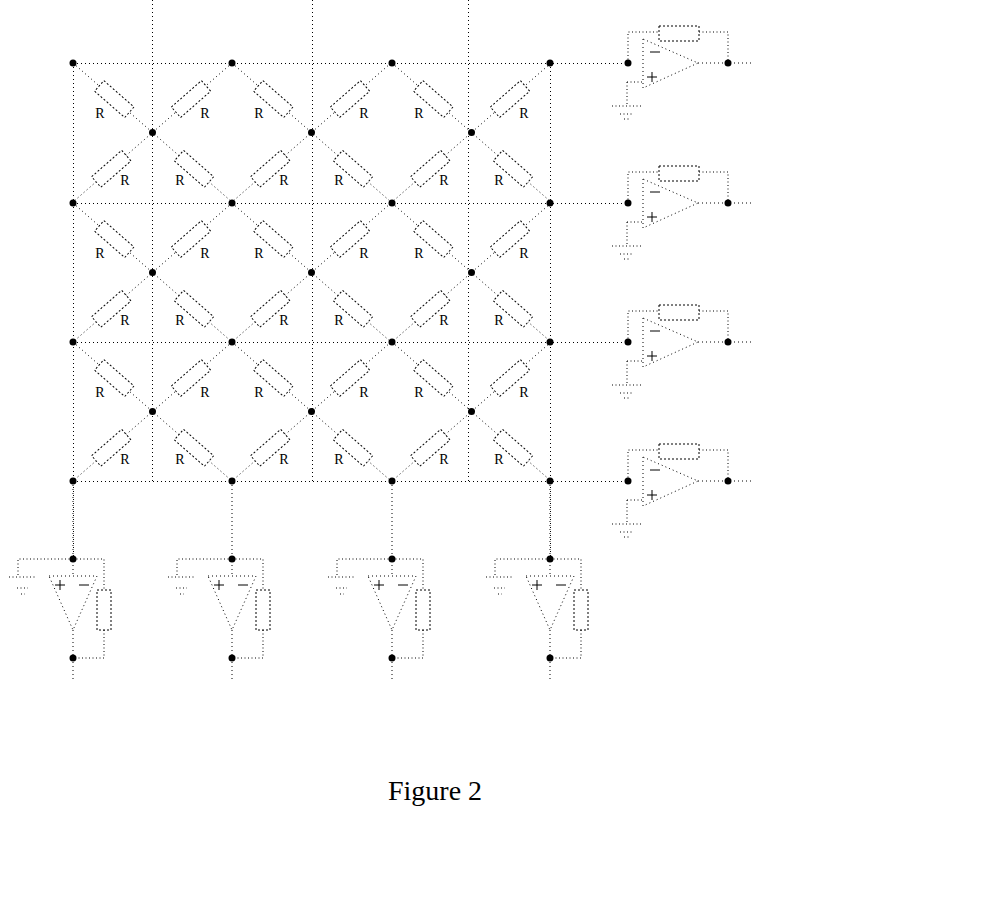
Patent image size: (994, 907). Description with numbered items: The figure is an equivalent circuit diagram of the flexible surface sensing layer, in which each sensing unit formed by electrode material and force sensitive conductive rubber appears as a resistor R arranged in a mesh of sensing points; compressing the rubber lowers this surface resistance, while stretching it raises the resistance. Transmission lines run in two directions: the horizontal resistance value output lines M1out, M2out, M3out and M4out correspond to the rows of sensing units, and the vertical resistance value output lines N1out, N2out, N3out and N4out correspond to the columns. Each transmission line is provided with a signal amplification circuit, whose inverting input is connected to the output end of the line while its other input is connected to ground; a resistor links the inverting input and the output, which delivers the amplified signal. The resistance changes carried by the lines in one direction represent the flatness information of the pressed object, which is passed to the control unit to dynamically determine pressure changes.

The resistance value output line M1out is at (731, 72).
The resistance value output line M2out is at (735, 212).
The resistance value output line M3out is at (735, 351).
The resistance value output line M4out is at (736, 490).
The resistance value output line N1out is at (60, 601).
The resistance value output line N2out is at (219, 601).
The resistance value output line N3out is at (379, 601).
The resistance value output line N4out is at (537, 601).